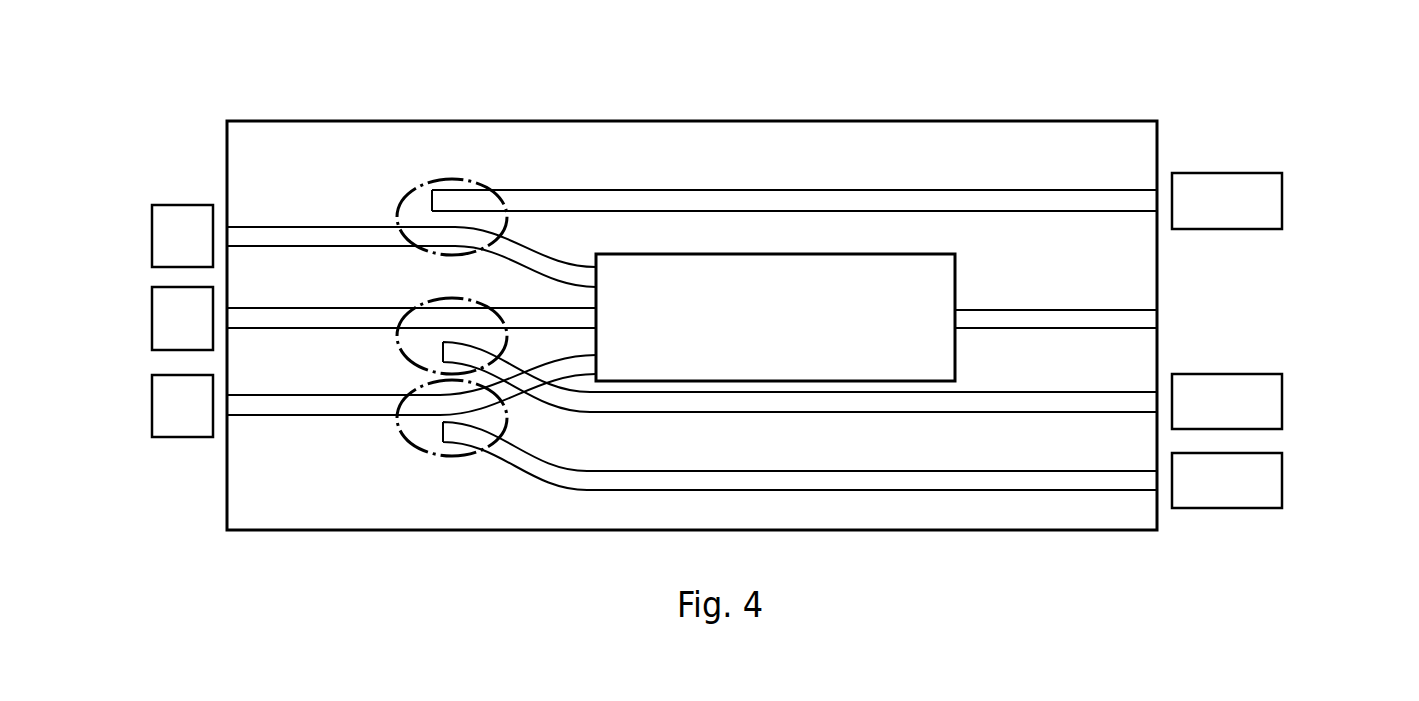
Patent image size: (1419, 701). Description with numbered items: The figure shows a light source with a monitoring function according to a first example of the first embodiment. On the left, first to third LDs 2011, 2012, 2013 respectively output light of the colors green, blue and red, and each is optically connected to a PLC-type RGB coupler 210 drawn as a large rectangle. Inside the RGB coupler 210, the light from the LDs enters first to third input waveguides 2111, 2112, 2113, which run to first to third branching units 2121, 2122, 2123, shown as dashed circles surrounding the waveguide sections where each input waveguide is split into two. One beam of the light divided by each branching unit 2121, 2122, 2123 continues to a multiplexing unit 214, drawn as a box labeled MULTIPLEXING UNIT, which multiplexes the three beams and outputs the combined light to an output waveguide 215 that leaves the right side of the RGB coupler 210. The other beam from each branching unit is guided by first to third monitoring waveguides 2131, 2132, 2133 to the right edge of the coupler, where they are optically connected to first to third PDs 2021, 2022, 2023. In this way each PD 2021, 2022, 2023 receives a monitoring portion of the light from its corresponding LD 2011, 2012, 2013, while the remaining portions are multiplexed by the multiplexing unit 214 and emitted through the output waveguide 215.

The PLC-type RGB coupler 210 is at (985, 121).
The first LD 2011 is at (150, 236).
The second LD 2012 is at (150, 318).
The third LD 2013 is at (150, 406).
The first input waveguide 2111 is at (340, 233).
The second input waveguide 2112 is at (340, 314).
The third input waveguide 2113 is at (340, 401).
The first branching unit 2121 is at (433, 176).
The second branching unit 2122 is at (433, 296).
The third branching unit 2123 is at (424, 458).
The first monitoring waveguide 2131 is at (1022, 198).
The second monitoring waveguide 2132 is at (1022, 397).
The third monitoring waveguide 2133 is at (1022, 477).
The multiplexing unit 214 is at (882, 254).
The output waveguide 215 is at (1022, 314).
The first PD 2021 is at (1283, 200).
The second PD 2022 is at (1283, 400).
The third PD 2023 is at (1283, 479).